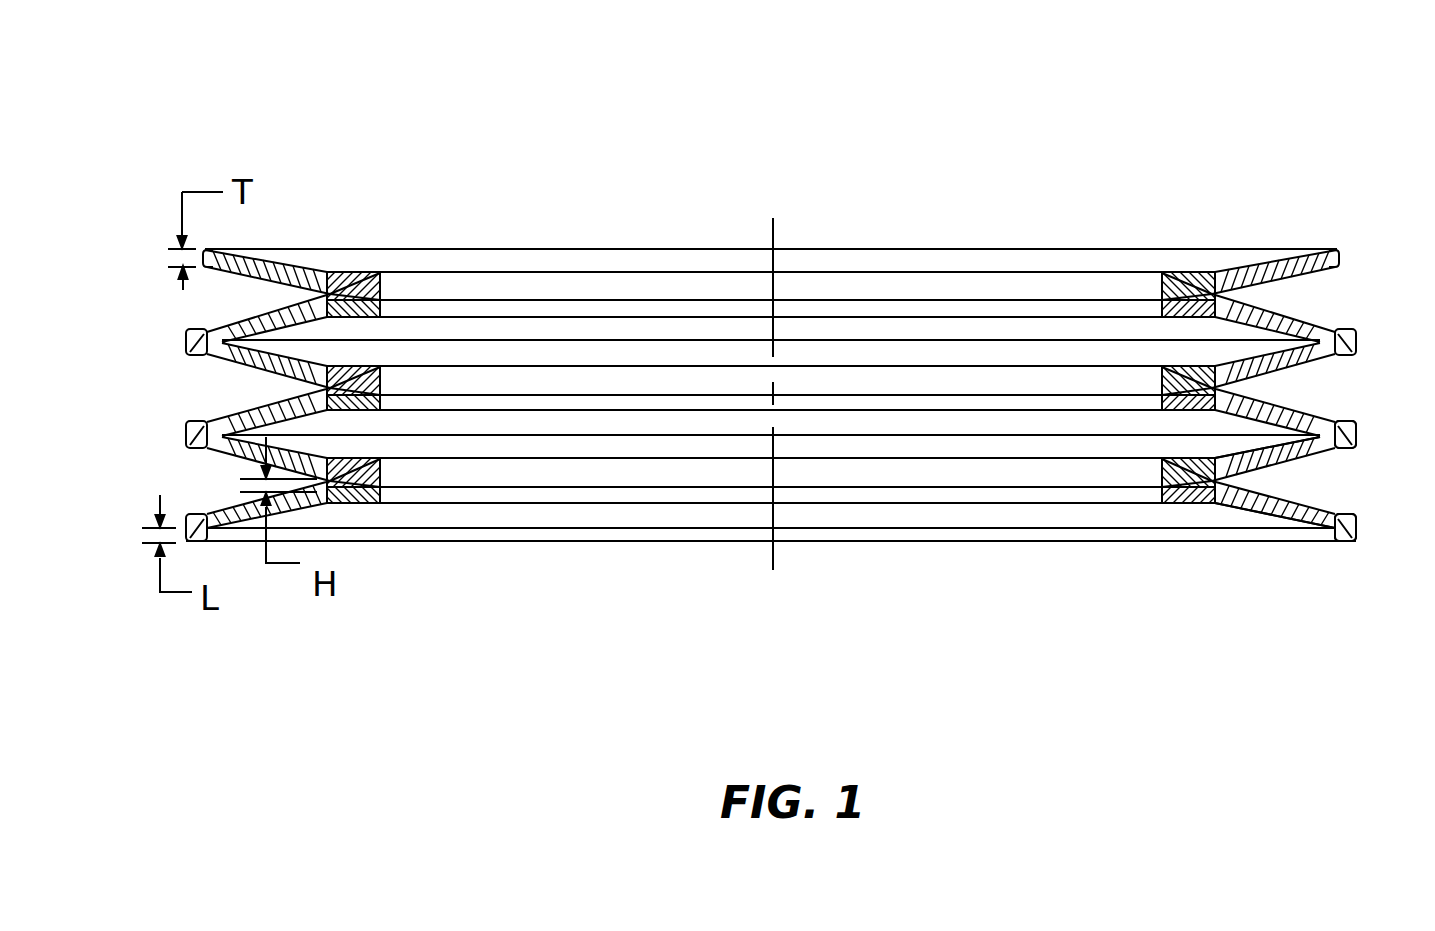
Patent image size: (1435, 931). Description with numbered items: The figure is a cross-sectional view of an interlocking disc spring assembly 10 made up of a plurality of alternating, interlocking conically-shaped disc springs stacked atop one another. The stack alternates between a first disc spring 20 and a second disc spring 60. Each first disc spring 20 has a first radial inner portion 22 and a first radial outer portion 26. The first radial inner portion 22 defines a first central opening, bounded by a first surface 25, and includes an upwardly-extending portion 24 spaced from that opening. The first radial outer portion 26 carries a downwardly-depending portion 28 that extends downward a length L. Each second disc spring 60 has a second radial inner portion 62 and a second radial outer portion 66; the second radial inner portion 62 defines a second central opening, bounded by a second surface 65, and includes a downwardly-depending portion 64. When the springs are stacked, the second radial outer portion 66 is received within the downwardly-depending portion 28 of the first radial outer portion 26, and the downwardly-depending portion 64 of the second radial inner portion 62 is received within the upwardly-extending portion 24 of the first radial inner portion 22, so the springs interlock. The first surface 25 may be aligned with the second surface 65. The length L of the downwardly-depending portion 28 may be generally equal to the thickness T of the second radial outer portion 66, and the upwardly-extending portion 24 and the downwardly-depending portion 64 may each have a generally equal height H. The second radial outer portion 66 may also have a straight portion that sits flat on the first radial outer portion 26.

The interlocking disc spring assembly 10 is at (478, 167).
The first conically-shaped disc spring 20 is at (232, 318).
The first radial inner portion 22 is at (1176, 512).
The upwardly-extending portion 24 is at (1212, 479).
The first surface 25 is at (833, 493).
The first radial outer portion 26 is at (1328, 539).
The downwardly-depending portion 28 is at (1360, 533).
The second conically-shaped disc spring 60 is at (362, 240).
The second radial inner portion 62 is at (1184, 445).
The downwardly-depending portion 64 is at (1165, 485).
The second surface 65 is at (890, 470).
The second radial outer portion 66 is at (1332, 459).